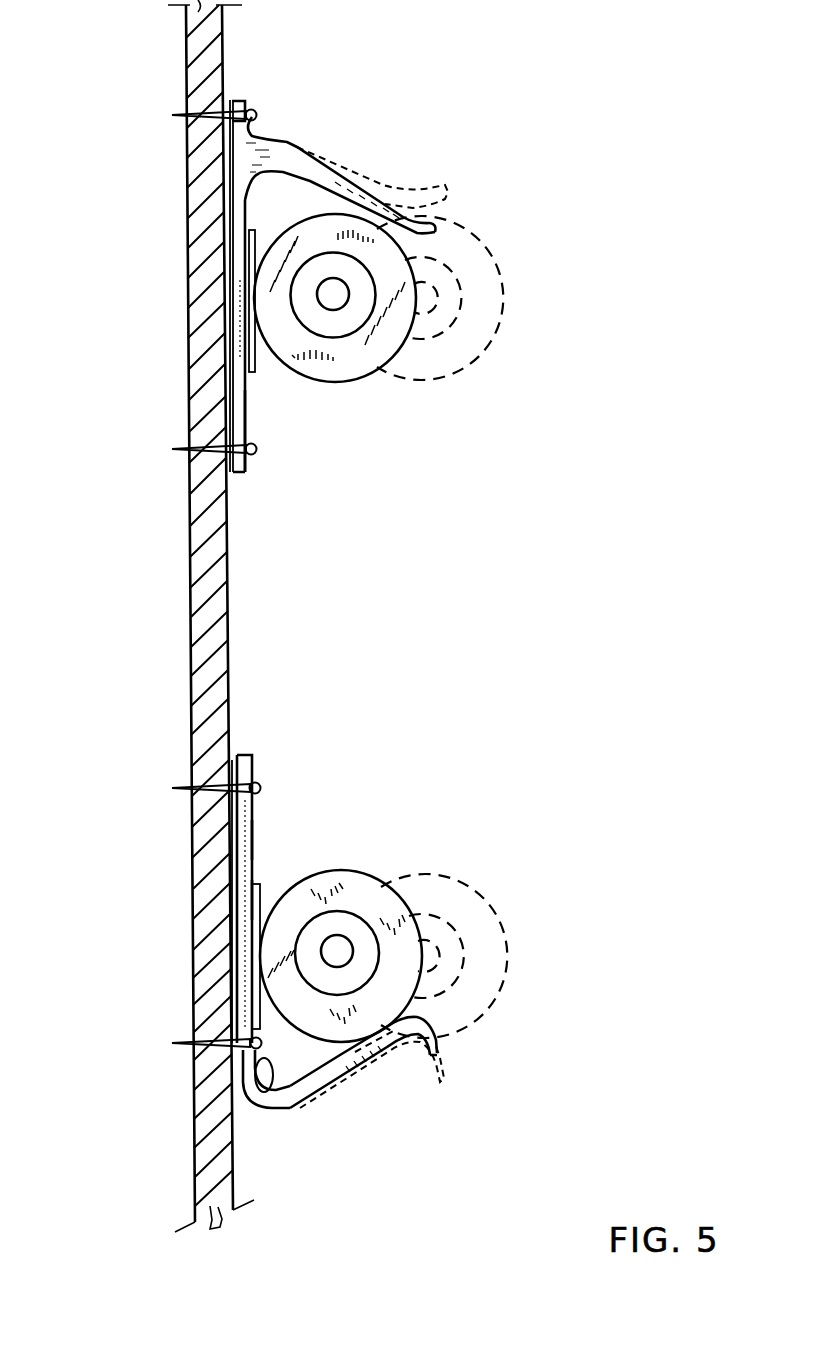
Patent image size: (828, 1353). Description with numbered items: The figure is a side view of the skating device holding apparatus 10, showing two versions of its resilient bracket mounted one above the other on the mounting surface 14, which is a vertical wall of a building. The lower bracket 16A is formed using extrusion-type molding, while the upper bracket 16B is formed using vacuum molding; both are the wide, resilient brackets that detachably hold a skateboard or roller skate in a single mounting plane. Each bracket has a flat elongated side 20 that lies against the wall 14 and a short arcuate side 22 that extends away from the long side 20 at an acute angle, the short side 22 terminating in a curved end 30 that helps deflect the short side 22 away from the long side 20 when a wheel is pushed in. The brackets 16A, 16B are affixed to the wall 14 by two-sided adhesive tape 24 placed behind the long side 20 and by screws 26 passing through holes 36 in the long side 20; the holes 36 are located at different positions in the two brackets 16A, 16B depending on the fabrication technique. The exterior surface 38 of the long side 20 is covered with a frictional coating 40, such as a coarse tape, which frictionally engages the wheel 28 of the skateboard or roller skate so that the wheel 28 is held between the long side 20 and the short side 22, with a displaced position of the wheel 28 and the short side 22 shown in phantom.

The skating device holding apparatus 10 is at (473, 604).
The mounting surface 14 is at (187, 597).
The bracket 16A is at (525, 925).
The bracket 16B is at (520, 323).
The flat elongated side 20 is at (230, 271).
The short arcuate side 22 is at (365, 197).
The two-sided adhesive tape 24 is at (222, 183).
The screw 26 is at (255, 116).
The wheel 28 is at (353, 362).
The curved end 30 is at (435, 218).
The hole 36 is at (243, 109).
The exterior surface 38 is at (255, 448).
The frictional coating 40 is at (250, 410).